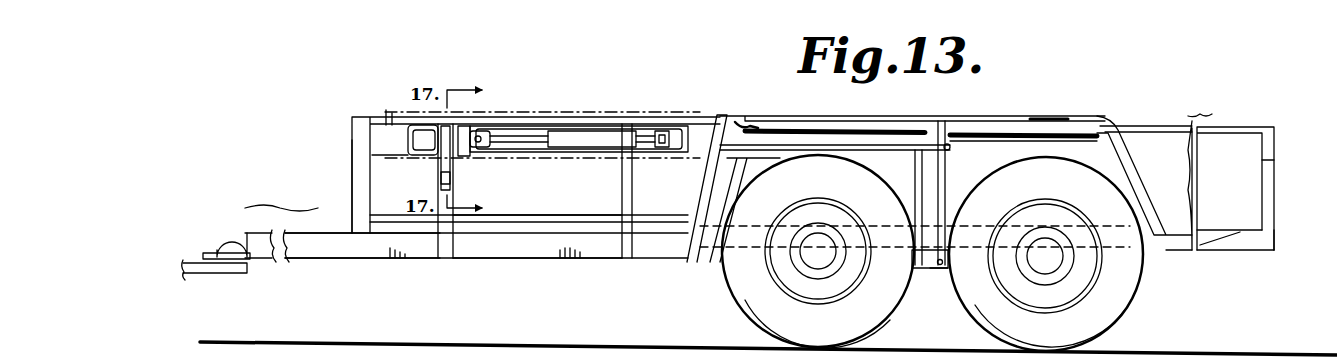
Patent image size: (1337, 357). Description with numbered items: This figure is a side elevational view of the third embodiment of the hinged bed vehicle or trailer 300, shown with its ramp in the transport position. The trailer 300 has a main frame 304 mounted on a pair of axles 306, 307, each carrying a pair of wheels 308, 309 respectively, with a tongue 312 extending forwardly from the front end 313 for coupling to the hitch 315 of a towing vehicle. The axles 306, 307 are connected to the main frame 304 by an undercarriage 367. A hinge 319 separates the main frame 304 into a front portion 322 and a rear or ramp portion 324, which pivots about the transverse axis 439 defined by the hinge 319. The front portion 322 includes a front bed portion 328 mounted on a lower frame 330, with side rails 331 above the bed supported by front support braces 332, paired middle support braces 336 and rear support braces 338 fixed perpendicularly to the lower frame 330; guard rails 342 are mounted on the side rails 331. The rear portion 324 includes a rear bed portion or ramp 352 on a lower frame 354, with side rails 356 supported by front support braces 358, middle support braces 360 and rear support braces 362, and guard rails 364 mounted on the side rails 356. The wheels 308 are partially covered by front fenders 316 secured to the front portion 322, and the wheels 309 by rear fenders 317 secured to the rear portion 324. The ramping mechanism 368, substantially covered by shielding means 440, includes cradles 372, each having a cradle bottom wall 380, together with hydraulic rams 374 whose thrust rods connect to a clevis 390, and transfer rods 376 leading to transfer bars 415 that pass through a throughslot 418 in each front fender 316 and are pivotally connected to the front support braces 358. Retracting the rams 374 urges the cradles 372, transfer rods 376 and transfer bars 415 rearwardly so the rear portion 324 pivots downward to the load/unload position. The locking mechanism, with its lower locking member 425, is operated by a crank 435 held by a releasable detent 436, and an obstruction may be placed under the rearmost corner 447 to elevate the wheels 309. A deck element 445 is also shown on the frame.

The hinged bed vehicle or trailer 300 is at (322, 86).
The main frame 304 is at (592, 78).
The axle 306 is at (818, 250).
The axle 307 is at (1044, 254).
The wheels 308 is at (740, 308).
The wheels 309 is at (980, 316).
The tongue 312 is at (318, 248).
The front or forward end 313 is at (306, 156).
The hitch 315 is at (224, 264).
The front fenders 316 is at (806, 122).
The rear fenders 317 is at (1092, 120).
The hinge 319 is at (940, 232).
The front portion 322 is at (688, 85).
The rear or ramp portion 324 is at (1210, 102).
The front bed portion 328 is at (525, 222).
The lower frame 330 is at (500, 245).
The side rails 331 is at (388, 116).
The front support braces 332 is at (356, 180).
The middle support braces 336 is at (640, 196).
The rear support braces 338 is at (918, 160).
The guard rails 342 is at (552, 124).
The rear bed portion or ramp 352 is at (1218, 232).
The lower frame 354 is at (1214, 252).
The side rails 356 is at (1204, 140).
The front support braces 358 is at (956, 150).
The middle support braces 360 is at (1100, 150).
The rear support braces 362 is at (1264, 186).
The guard rails 364 is at (1176, 122).
The undercarriage 367 is at (936, 270).
The ramping mechanism 368 is at (486, 82).
The cradles 372 is at (598, 124).
The hydraulic piston and cylinder units or rams 374 is at (618, 153).
The transfer rods 376 is at (710, 118).
The cradle bottom wall 380 is at (556, 153).
The clevis 390 is at (472, 127).
The transfer bars 415 is at (884, 142).
The throughslot 418 is at (745, 126).
The lower locking member 425 is at (400, 137).
The crank 435 is at (440, 165).
The releasable detent 436 is at (414, 191).
The transverse axis 439 is at (918, 260).
The shielding means 440 is at (692, 110).
The deck pad 445 is at (1038, 118).
The rearmost corner 447 is at (1276, 255).